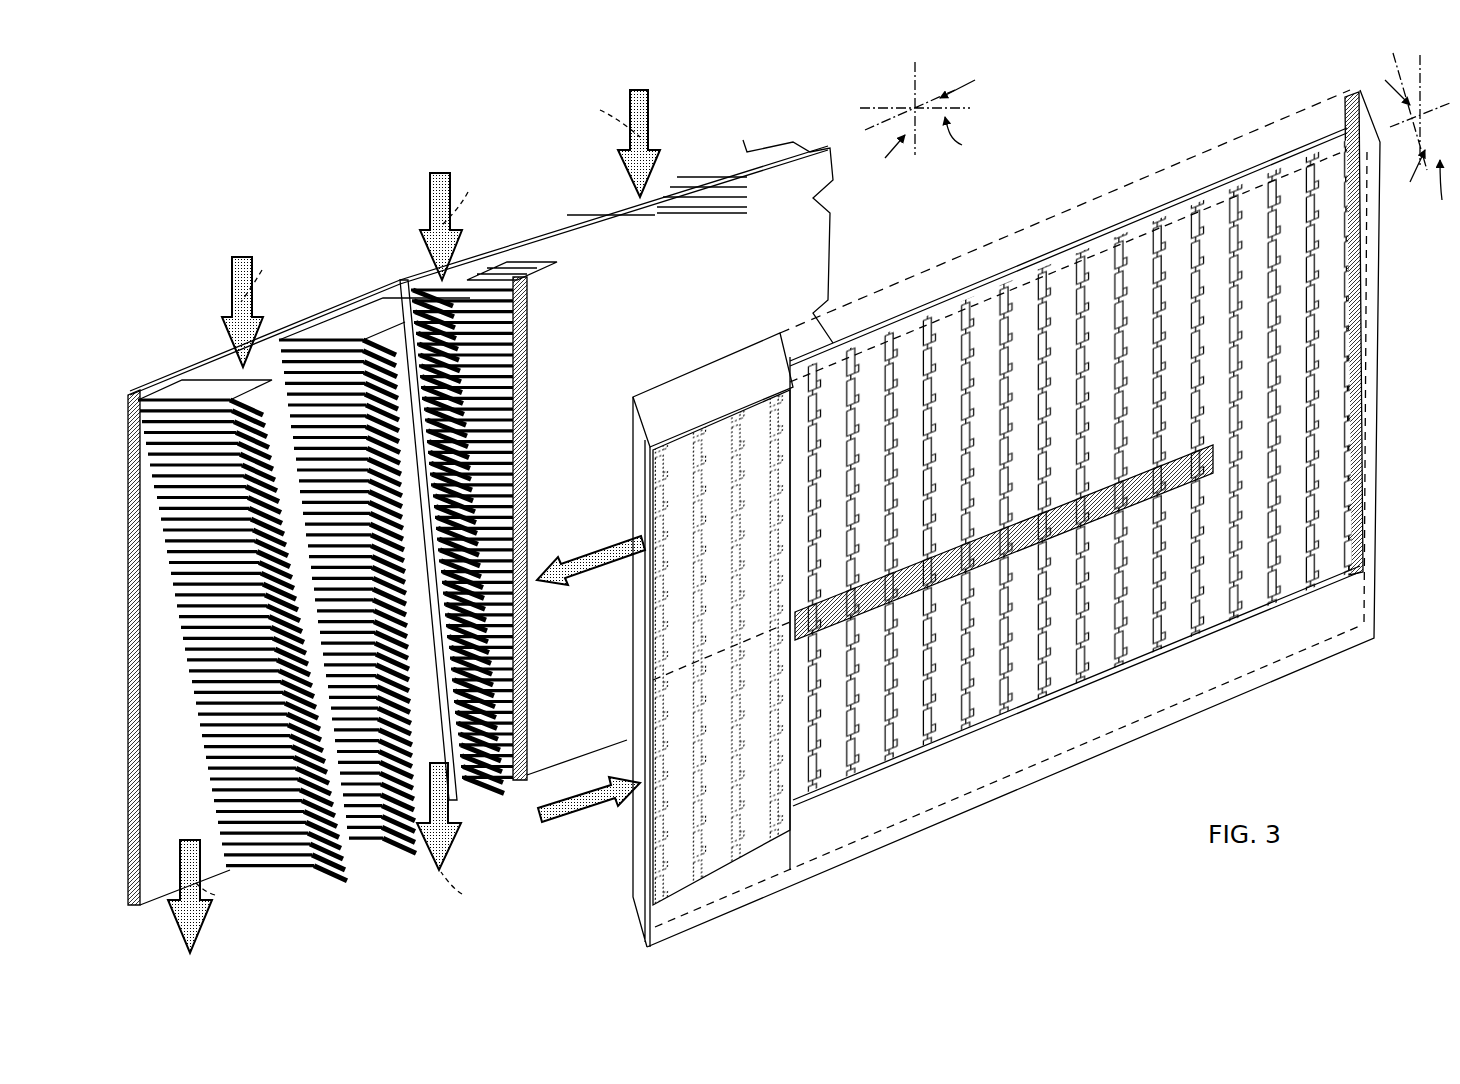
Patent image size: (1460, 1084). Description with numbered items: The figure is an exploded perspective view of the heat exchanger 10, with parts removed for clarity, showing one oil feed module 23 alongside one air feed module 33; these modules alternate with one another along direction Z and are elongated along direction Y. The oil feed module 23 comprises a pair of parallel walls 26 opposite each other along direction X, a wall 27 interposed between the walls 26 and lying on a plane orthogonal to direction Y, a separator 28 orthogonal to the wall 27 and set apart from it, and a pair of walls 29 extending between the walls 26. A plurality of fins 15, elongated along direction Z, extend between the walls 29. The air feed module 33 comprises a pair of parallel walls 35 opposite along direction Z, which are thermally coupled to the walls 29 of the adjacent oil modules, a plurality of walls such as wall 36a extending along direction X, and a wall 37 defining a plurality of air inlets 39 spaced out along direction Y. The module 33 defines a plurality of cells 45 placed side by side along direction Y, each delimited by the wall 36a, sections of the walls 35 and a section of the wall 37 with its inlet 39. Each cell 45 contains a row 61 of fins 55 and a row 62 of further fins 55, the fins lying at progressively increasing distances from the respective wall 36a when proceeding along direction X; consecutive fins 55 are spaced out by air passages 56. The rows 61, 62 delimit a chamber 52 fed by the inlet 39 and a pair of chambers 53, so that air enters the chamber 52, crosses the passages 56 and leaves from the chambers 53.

The heat exchanger assembly 10 is at (195, 152).
The fins 15 is at (945, 325).
The oil feed modules 23 is at (1268, 124).
The parallel walls 26 is at (1115, 207).
The wall 27 is at (1370, 512).
The separator 28 is at (1058, 547).
The walls 29 is at (700, 362).
The air feed modules 33 is at (750, 130).
The parallel walls 35 is at (540, 215).
The wall 36a is at (417, 325).
The wall 37 is at (346, 290).
The air inlets 39 is at (213, 379).
The cells 45 is at (211, 312).
The chamber 52 is at (347, 522).
The chambers 53 is at (177, 677).
The fins 55 is at (334, 544).
The air passages 56 is at (349, 544).
The row of fins 61 is at (680, 180).
The row of further fins 62 is at (508, 362).